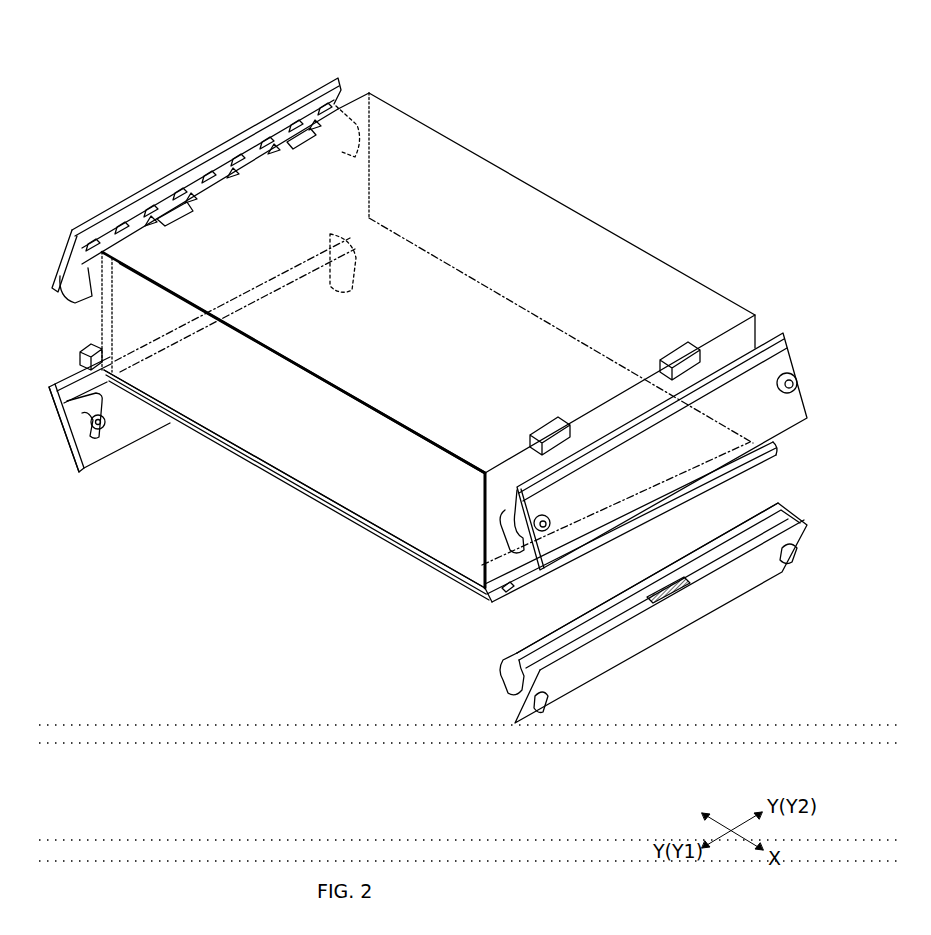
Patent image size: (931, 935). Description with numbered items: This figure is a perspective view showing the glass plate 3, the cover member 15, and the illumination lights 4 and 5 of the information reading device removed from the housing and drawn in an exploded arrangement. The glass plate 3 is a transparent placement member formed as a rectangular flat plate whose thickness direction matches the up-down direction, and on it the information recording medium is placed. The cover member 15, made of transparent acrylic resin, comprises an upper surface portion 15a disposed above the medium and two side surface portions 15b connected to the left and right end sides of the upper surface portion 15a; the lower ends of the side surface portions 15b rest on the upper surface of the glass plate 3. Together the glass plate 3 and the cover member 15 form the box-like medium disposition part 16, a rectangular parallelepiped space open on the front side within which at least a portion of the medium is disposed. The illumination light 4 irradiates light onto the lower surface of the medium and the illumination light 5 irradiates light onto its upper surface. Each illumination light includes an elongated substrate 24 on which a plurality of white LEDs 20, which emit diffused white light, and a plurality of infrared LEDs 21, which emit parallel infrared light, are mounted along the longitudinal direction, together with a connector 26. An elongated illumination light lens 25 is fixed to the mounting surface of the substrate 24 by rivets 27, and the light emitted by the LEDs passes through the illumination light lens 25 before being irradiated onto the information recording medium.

The glass plate 3 is at (328, 507).
The illumination light 4 is at (82, 496).
The illumination light 5 is at (172, 66).
The cover member 15 is at (555, 200).
The upper surface portion 15a is at (352, 400).
The side surface portions 15b is at (97, 320).
The medium disposition part 16 is at (273, 443).
The white LEDs 20 is at (94, 240).
The infrared LEDs 21 is at (148, 220).
The substrate 24 is at (78, 230).
The illumination light lens 25 is at (340, 94).
The connector 26 is at (665, 583).
The rivets 27 is at (62, 282).